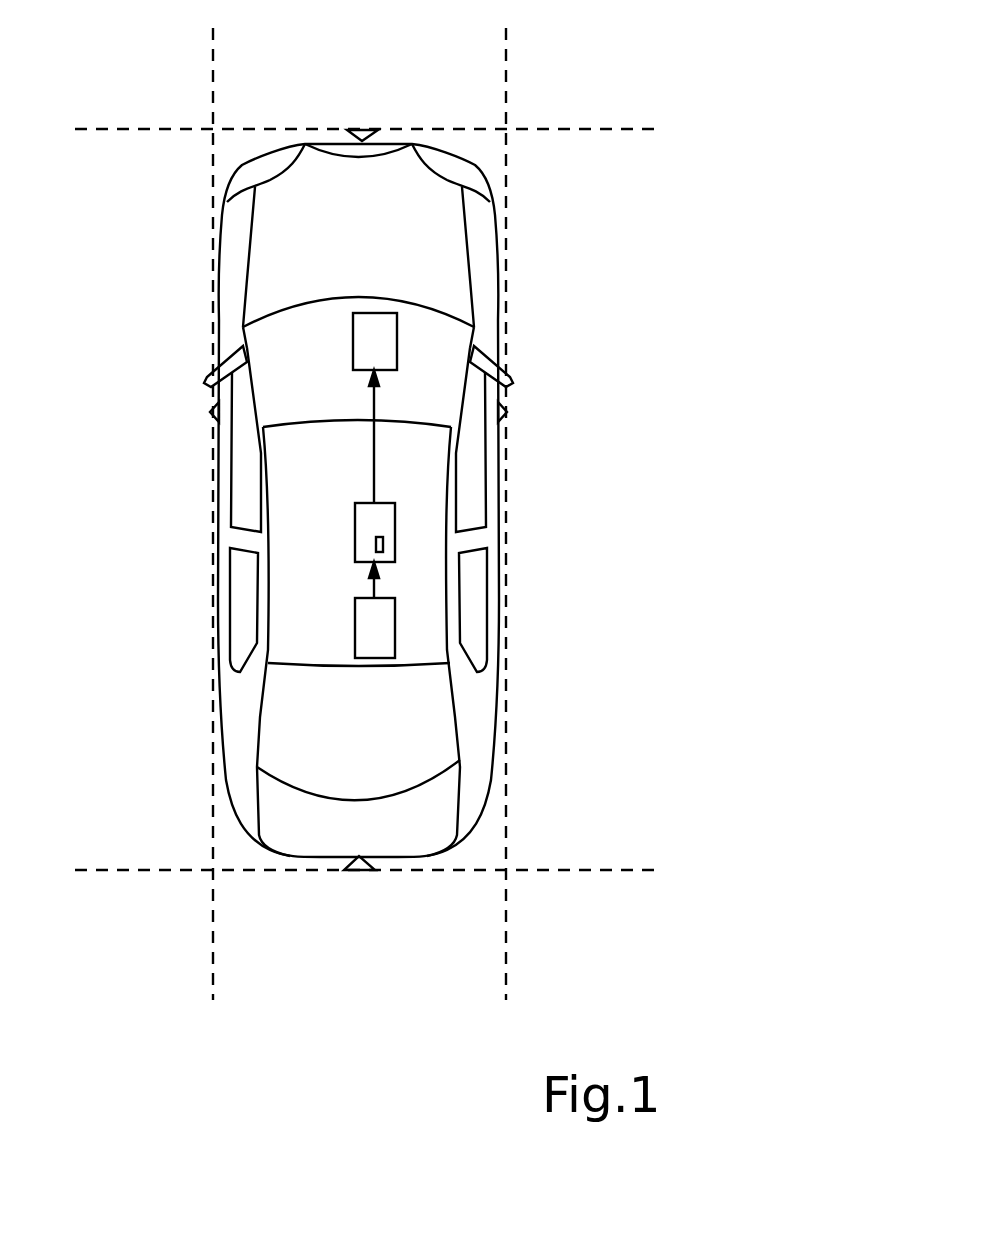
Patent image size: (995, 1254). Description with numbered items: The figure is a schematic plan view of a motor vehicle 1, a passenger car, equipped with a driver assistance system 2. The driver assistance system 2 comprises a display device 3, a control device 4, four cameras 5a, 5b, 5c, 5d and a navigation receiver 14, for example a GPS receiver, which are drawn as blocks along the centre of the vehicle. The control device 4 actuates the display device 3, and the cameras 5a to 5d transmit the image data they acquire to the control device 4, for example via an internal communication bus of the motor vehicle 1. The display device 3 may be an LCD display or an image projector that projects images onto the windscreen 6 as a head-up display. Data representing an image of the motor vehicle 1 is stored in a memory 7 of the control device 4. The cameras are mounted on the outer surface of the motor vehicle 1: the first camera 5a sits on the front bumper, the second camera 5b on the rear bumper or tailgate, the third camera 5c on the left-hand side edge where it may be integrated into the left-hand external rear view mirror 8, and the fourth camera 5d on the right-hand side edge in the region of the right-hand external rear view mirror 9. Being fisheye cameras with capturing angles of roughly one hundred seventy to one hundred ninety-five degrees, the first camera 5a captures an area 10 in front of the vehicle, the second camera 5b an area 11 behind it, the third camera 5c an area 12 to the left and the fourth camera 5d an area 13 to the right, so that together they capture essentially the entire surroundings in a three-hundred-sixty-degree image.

The motor vehicle 1 is at (447, 218).
The driver assistance system 2 is at (290, 632).
The display device 3 is at (353, 345).
The control device 4 is at (355, 522).
The first camera 5a is at (362, 130).
The second camera 5b is at (359, 870).
The third camera 5c is at (210, 412).
The fourth camera 5d is at (507, 412).
The windscreen 6 is at (287, 375).
The memory 7 is at (380, 537).
The left-hand external rear view mirror 8 is at (216, 372).
The right-hand external rear view mirror 9 is at (495, 356).
The area in front of the motor vehicle 10 is at (114, 29).
The area behind the motor vehicle 11 is at (112, 995).
The area to the left next to the motor vehicle 12 is at (91, 97).
The area to the right next to the motor vehicle 13 is at (659, 104).
The navigation receiver 14 is at (375, 658).